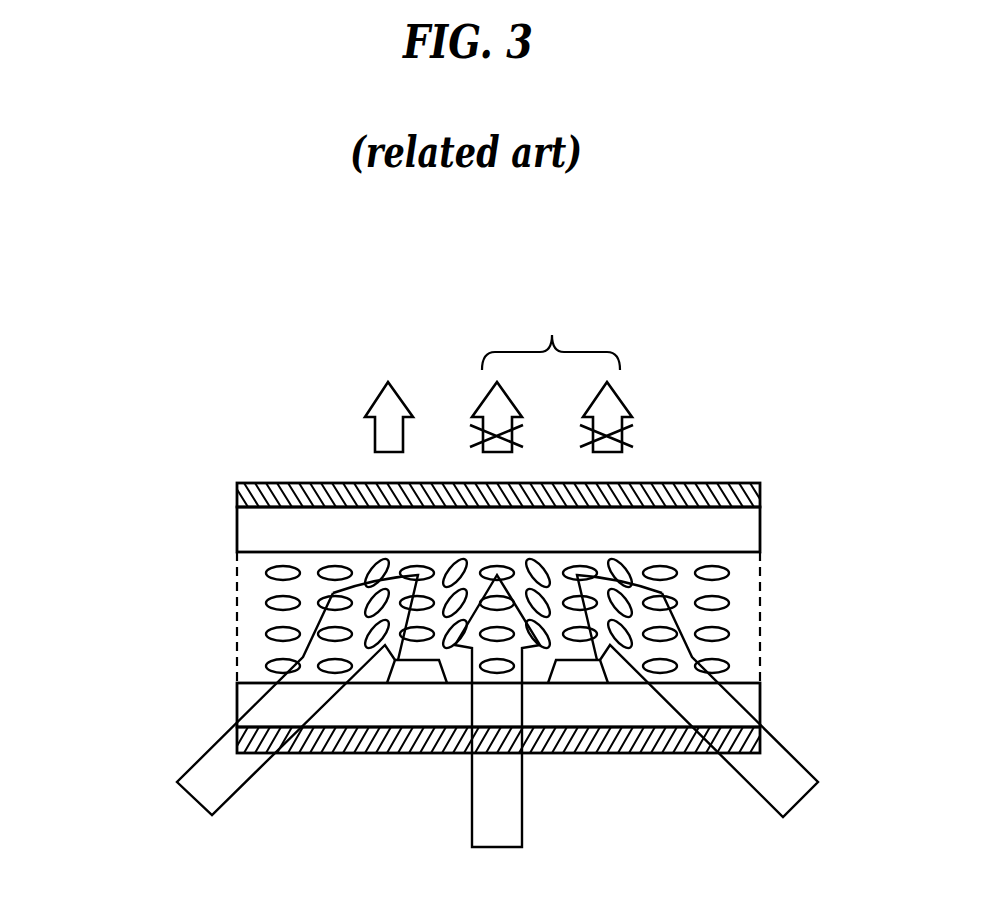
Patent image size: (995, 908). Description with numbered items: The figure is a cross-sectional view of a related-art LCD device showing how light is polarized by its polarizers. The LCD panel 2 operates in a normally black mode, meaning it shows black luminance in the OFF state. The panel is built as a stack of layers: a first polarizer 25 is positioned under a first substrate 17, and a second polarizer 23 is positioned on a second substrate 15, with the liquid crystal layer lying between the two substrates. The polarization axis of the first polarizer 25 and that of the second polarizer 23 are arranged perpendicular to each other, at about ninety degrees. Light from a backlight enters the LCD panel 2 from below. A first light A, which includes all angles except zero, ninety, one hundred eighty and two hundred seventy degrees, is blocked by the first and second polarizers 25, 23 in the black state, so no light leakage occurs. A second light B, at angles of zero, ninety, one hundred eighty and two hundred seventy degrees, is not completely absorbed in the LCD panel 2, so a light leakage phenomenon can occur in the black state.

The LCD panel 2 is at (720, 420).
The first polarizer 25 is at (237, 492).
The first substrate 17 is at (250, 537).
The second substrate 15 is at (243, 695).
The second polarizer 23 is at (327, 755).